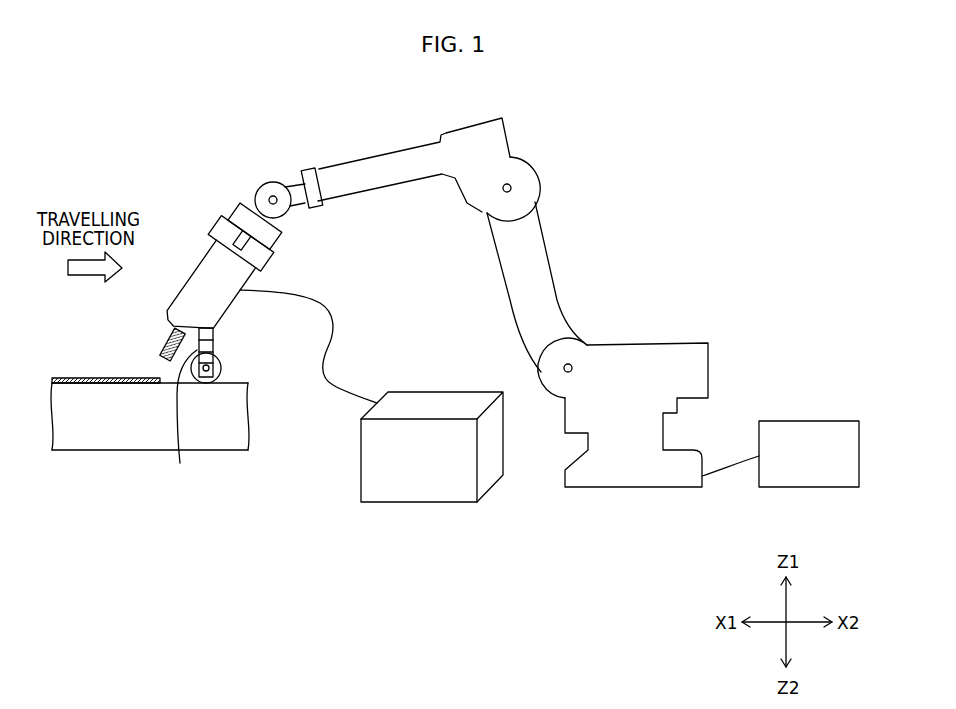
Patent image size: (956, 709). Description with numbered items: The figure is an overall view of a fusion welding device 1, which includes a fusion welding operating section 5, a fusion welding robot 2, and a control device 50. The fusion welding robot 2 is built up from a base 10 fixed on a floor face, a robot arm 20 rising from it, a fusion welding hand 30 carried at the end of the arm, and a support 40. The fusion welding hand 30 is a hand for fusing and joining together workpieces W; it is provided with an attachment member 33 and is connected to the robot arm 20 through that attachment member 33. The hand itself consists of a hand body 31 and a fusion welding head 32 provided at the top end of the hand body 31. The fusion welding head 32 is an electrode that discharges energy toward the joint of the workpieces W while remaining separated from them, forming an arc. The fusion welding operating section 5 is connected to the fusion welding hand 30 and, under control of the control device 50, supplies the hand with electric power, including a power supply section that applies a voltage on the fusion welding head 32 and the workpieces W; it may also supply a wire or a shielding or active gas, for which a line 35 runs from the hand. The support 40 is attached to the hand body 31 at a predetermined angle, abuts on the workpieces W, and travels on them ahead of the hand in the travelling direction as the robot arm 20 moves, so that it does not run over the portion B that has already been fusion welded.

The fusion welding device 1 is at (573, 116).
The fusion welding robot 2 is at (556, 183).
The robot arm 20 is at (537, 252).
The base 10 is at (644, 488).
The fusion welding operating section 5 is at (468, 391).
The control device 50 is at (820, 421).
The fusion welding hand 30 is at (189, 221).
The hand body 31 is at (208, 268).
The fusion welding head 32 is at (168, 345).
The attachment member 33 is at (238, 213).
The sensor cable 35 is at (182, 420).
The support 40 is at (221, 350).
The workpieces W is at (227, 450).
The portion having been fusion welded B is at (72, 378).